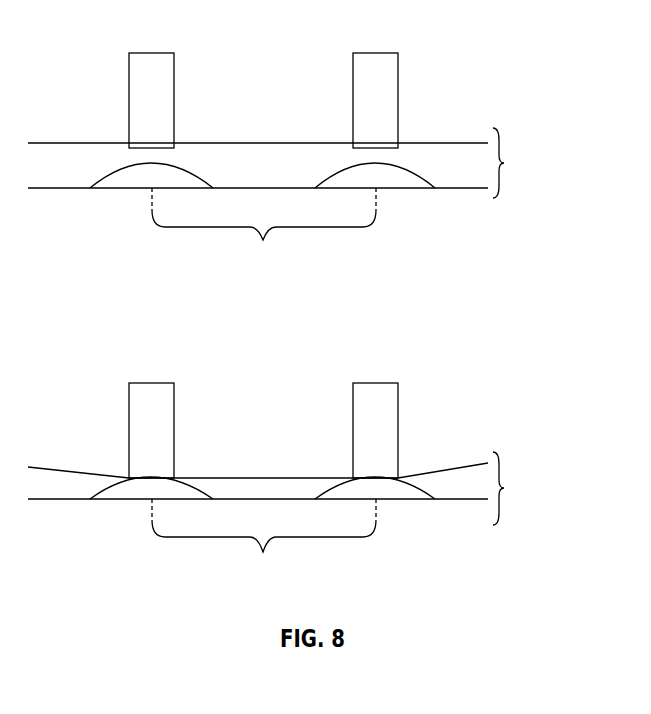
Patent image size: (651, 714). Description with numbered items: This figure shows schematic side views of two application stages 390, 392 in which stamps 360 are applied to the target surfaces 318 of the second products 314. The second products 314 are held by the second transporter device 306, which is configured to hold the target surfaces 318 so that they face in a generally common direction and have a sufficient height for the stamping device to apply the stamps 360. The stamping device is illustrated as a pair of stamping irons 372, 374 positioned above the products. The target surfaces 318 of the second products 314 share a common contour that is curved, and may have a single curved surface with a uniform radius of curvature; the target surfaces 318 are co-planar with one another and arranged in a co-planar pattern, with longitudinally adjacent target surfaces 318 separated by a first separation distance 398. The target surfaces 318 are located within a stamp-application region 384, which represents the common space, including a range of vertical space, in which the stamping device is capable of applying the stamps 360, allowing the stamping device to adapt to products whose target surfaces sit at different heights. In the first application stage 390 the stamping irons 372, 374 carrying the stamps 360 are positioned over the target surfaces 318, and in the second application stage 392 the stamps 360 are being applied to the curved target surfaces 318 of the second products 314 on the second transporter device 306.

The second transporter device 306 is at (80, 188).
The second products 314 is at (98, 183).
The target surfaces 318 is at (117, 166).
The stamps 360 is at (178, 143).
The stamping iron 372 is at (152, 52).
The stamping iron 374 is at (376, 52).
The stamp-application region 384 is at (516, 326).
The application stage 390 is at (558, 142).
The application stage 392 is at (558, 466).
The first separation distance 398 is at (264, 384).